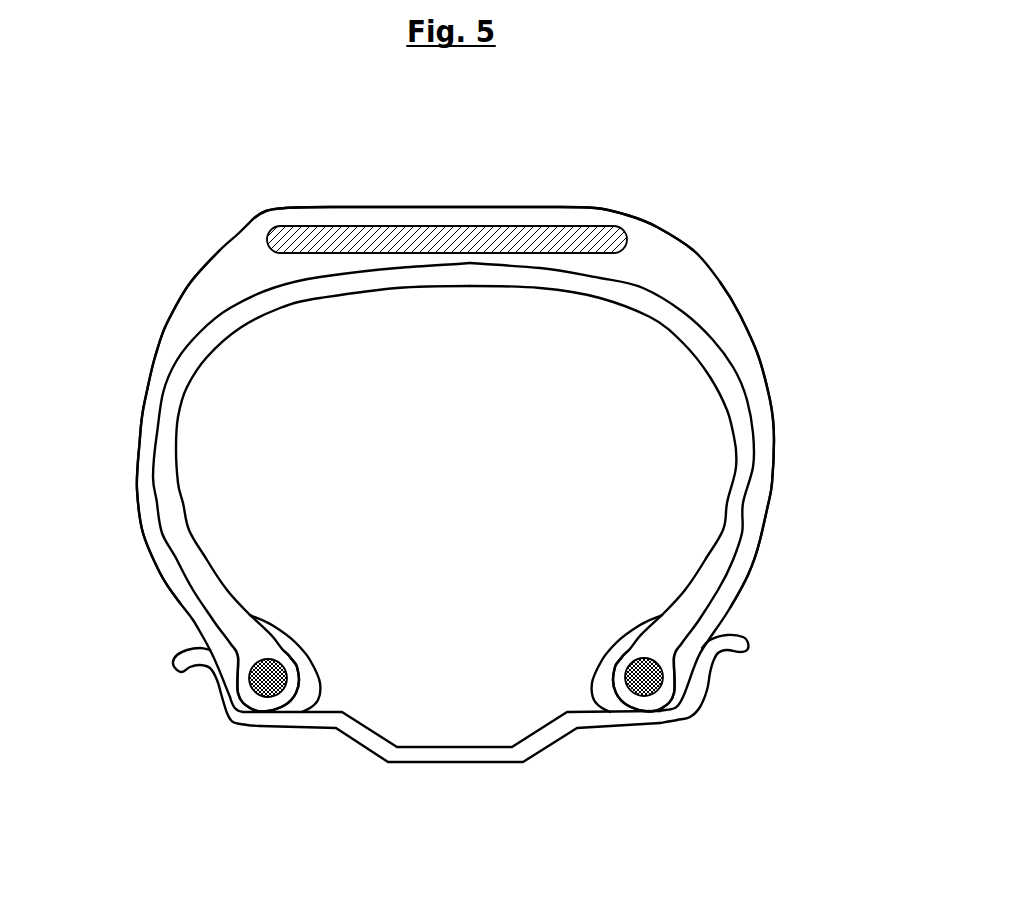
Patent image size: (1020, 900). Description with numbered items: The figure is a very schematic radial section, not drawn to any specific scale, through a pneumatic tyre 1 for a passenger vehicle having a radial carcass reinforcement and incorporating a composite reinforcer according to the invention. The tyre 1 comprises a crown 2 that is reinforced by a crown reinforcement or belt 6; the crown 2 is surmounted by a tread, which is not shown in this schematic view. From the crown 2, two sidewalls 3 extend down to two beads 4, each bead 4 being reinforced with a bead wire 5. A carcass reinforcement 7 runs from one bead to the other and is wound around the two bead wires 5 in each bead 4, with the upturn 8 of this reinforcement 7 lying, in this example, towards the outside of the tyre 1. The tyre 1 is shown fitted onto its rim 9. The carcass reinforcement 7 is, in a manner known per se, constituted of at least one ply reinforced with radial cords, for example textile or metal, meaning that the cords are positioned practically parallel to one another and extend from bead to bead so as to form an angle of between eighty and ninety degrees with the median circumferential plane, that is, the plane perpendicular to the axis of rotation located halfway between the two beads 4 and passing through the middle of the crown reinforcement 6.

The pneumatic tyre 1 is at (780, 387).
The crown 2 is at (548, 217).
The sidewall 3 is at (152, 455).
The bead 4 is at (298, 703).
The bead wire 5 is at (268, 680).
The crown reinforcement or belt 6 is at (442, 227).
The carcass reinforcement 7 is at (175, 362).
The upturn 8 is at (242, 667).
The rim 9 is at (225, 685).